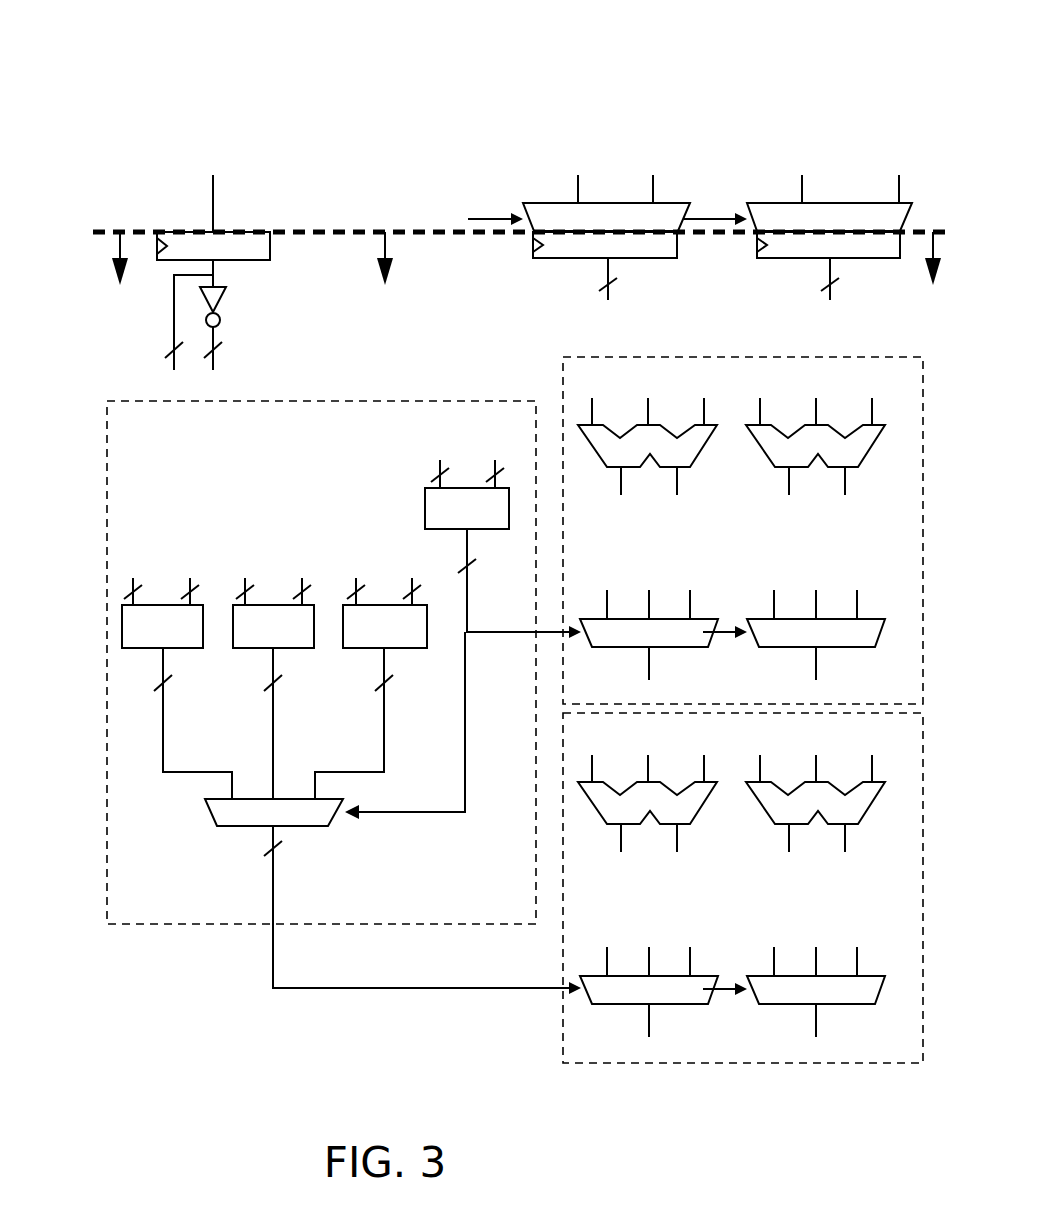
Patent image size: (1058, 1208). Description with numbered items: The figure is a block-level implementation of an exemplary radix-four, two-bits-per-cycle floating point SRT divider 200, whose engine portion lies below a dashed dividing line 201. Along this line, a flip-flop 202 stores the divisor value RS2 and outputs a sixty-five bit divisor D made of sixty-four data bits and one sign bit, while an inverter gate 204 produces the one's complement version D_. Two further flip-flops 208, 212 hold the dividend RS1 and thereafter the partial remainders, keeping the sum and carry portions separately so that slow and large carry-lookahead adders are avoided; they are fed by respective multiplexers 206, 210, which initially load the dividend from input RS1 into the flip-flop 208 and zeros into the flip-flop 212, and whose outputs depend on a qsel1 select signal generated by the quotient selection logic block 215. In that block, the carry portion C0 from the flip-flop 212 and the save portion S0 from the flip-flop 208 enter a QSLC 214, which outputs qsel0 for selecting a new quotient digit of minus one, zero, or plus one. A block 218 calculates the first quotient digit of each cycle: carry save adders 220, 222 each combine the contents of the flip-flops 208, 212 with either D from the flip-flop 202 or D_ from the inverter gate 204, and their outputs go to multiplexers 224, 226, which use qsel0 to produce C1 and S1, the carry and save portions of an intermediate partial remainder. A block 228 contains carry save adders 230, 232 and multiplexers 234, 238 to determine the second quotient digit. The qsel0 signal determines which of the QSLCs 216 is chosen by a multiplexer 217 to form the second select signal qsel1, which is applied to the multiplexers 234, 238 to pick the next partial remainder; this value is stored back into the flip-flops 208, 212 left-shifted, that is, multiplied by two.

The SRT divider 200 is at (243, 88).
The dashed dividing line 201 is at (96, 230).
The flip-flop 202 is at (271, 248).
The inverter gate 204 is at (222, 300).
The multiplexer 206 is at (540, 203).
The flip-flop 208 is at (557, 259).
The multiplexer 210 is at (907, 218).
The flip-flop 212 is at (800, 259).
The QSLC 214 is at (425, 493).
The quotient selection logic block 215 is at (215, 925).
The QSLCs 216 is at (103, 605).
The multiplexer 217 is at (210, 806).
The block 218 is at (730, 357).
The carry save adder 220 is at (668, 447).
The carry save adder 222 is at (836, 447).
The multiplexer 224 is at (664, 633).
The multiplexer 226 is at (834, 633).
The block 228 is at (562, 1038).
The carry save adder 230 is at (668, 804).
The carry save adder 232 is at (836, 804).
The multiplexer 234 is at (672, 990).
The multiplexer 238 is at (834, 990).